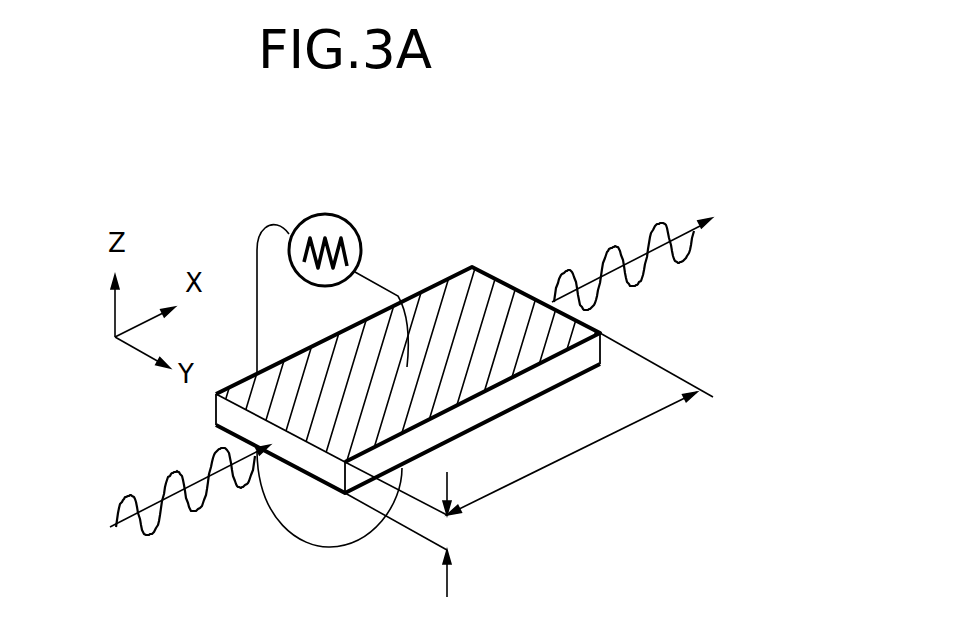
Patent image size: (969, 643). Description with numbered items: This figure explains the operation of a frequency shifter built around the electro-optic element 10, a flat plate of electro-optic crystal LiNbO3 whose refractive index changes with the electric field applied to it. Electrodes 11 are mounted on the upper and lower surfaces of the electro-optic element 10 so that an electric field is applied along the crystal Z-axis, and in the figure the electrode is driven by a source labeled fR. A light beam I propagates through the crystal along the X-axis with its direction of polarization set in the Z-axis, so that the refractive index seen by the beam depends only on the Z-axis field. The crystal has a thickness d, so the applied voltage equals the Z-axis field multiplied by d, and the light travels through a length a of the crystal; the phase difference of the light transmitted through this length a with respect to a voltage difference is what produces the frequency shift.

The electro-optic element 10 is at (588, 358).
The electrodes 11 is at (480, 288).
The oscillator at resonance frequency fR is at (332, 371).
The length of LiNbO3 a is at (529, 424).
The thickness of LiNbO3 d is at (410, 534).
The light beam I is at (400, 376).